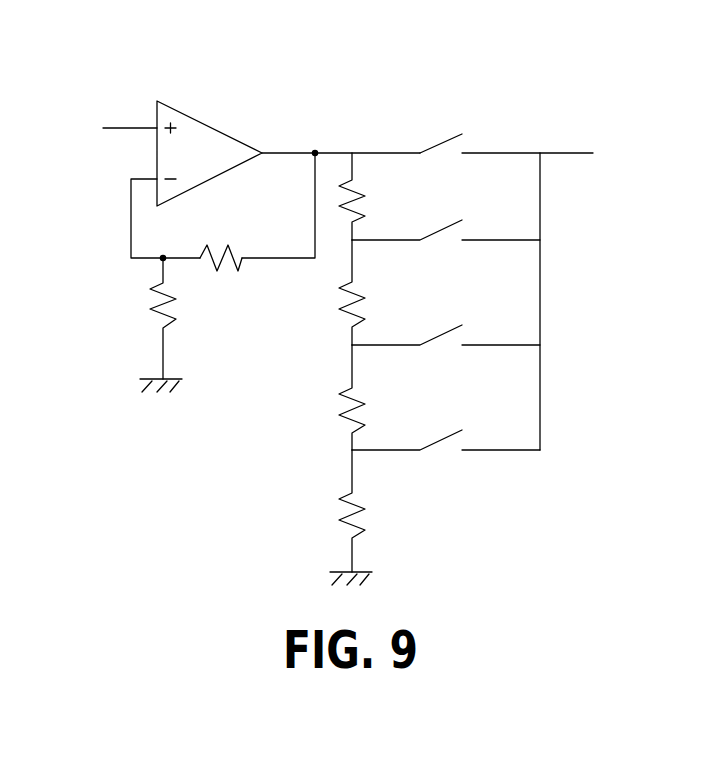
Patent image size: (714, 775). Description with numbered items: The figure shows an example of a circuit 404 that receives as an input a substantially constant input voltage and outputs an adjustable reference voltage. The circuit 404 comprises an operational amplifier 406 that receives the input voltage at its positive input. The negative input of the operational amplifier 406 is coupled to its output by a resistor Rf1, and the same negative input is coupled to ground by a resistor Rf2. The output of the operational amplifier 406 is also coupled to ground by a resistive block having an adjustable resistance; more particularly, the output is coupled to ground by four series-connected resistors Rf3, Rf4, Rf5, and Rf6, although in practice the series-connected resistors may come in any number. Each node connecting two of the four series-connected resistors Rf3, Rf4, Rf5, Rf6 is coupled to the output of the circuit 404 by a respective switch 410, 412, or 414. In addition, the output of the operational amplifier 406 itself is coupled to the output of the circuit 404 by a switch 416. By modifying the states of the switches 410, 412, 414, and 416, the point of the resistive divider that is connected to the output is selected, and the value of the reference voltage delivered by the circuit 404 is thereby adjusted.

The circuit 404 is at (447, 57).
The operational amplifier 406 is at (211, 126).
The switch 410 is at (448, 437).
The switch 412 is at (448, 332).
The switch 414 is at (457, 221).
The switch 416 is at (441, 139).
The resistor Rf1 is at (221, 245).
The resistor Rf2 is at (181, 318).
The resistor Rf3 is at (369, 196).
The resistor Rf4 is at (370, 292).
The resistor Rf5 is at (370, 397).
The resistor Rf6 is at (370, 511).